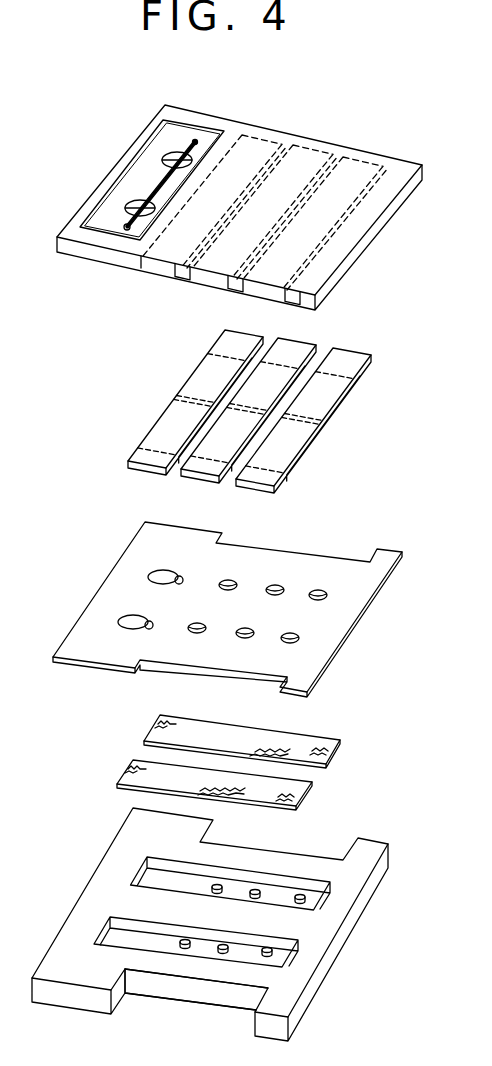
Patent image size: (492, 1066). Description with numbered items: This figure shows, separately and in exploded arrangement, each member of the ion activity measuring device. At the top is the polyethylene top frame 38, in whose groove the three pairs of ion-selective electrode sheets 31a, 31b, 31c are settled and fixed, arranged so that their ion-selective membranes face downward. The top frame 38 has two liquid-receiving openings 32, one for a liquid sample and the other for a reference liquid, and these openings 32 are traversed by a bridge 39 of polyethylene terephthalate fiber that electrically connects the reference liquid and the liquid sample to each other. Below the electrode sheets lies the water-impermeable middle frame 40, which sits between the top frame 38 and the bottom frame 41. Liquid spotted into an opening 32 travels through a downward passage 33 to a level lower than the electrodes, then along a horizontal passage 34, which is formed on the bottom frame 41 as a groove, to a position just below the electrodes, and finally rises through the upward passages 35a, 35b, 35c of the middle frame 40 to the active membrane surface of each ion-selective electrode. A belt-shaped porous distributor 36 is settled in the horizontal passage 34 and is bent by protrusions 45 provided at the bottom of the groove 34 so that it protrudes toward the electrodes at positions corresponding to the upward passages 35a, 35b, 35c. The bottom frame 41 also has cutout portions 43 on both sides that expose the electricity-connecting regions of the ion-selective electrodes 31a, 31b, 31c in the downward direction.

The top frame 38 is at (373, 153).
The bridge 39 is at (160, 178).
The liquid-receiving openings 32 is at (140, 200).
The ion-selective electrode sheets 31a is at (207, 372).
The ion-selective electrode sheets 31b is at (300, 350).
The ion-selective electrode sheets 31c is at (360, 365).
The water-impermeable middle frame 40 is at (360, 598).
The downward passage 33 is at (133, 615).
The upward passage 35a is at (232, 578).
The upward passage 35b is at (277, 583).
The upward passage 35c is at (320, 590).
The porous distributor 36 is at (317, 742).
The bottom frame 41 is at (80, 912).
The horizontal passage 34 is at (150, 940).
The cutout portions 43 is at (213, 995).
The protrusion 45 is at (310, 898).